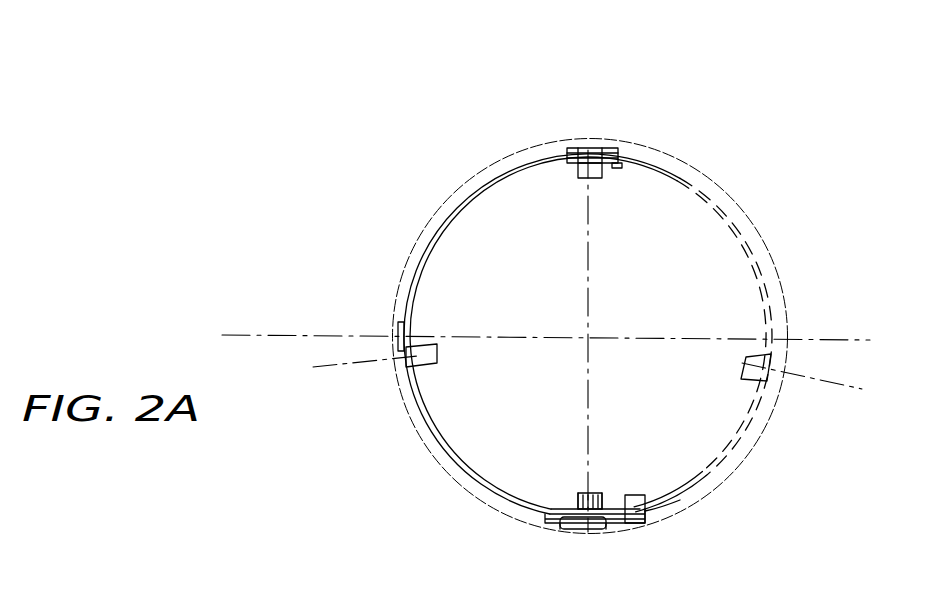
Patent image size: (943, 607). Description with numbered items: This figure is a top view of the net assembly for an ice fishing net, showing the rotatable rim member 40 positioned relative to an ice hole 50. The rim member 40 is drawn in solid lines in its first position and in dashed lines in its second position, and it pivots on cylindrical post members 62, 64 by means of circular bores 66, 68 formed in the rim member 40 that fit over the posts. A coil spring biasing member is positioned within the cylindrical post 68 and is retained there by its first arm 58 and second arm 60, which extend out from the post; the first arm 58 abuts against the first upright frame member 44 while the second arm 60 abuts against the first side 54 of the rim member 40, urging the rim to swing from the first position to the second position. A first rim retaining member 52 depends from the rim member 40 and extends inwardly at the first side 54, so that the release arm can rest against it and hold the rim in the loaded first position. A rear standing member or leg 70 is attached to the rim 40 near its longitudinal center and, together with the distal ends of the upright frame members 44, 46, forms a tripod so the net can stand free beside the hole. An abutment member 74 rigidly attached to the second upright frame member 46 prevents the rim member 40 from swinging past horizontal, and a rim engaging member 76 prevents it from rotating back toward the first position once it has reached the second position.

The second rim member 40 is at (432, 418).
The first upright frame member 44 is at (605, 528).
The second upright frame member 46 is at (603, 148).
The ice hole 50 is at (697, 165).
The first rim retaining member 52 is at (434, 365).
The first side 54 is at (418, 405).
The first arm 58 is at (565, 528).
The second arm 60 is at (606, 493).
The cylindrical post member 62 is at (580, 170).
The cylindrical post member 64 is at (572, 505).
The circular bore 66 is at (577, 160).
The circular bore 68 is at (603, 528).
The rear standing member or leg 70 is at (397, 324).
The abutment member 74 is at (618, 152).
The rim engaging member 76 is at (680, 500).